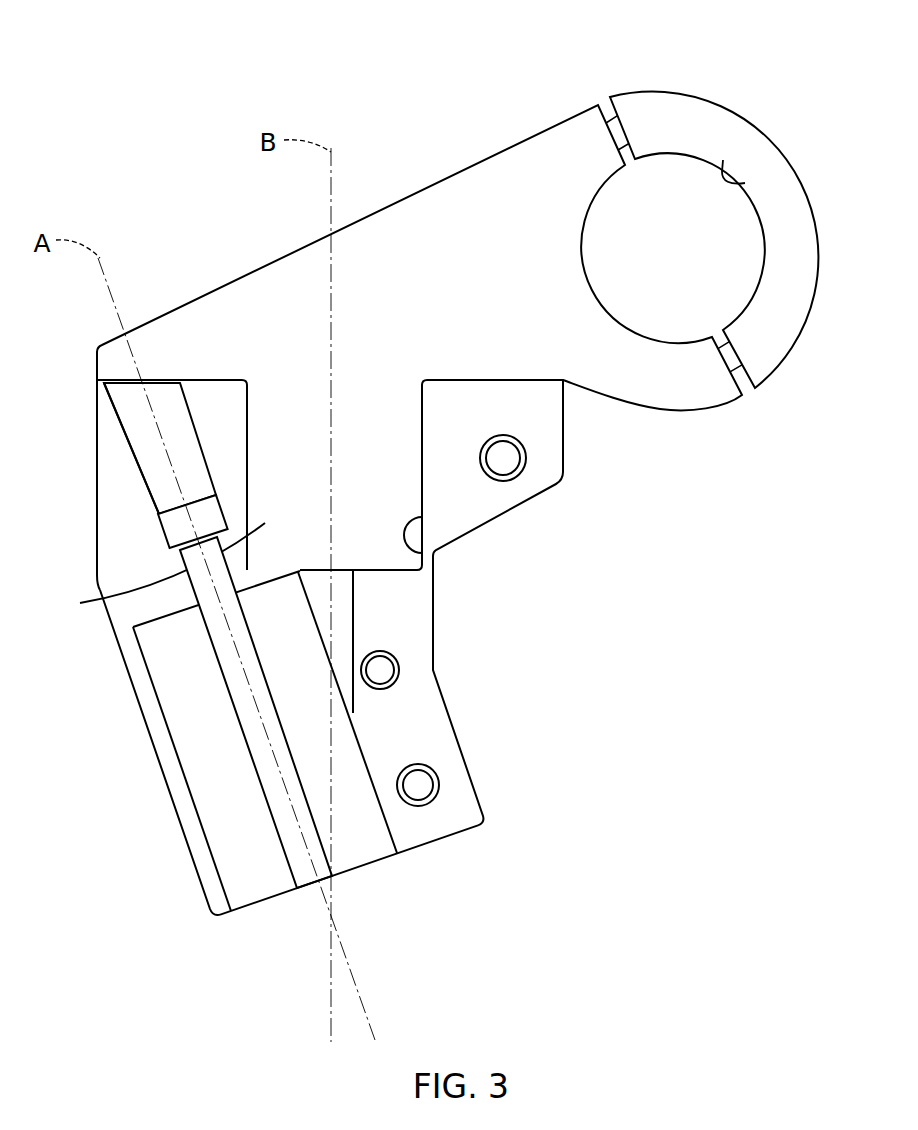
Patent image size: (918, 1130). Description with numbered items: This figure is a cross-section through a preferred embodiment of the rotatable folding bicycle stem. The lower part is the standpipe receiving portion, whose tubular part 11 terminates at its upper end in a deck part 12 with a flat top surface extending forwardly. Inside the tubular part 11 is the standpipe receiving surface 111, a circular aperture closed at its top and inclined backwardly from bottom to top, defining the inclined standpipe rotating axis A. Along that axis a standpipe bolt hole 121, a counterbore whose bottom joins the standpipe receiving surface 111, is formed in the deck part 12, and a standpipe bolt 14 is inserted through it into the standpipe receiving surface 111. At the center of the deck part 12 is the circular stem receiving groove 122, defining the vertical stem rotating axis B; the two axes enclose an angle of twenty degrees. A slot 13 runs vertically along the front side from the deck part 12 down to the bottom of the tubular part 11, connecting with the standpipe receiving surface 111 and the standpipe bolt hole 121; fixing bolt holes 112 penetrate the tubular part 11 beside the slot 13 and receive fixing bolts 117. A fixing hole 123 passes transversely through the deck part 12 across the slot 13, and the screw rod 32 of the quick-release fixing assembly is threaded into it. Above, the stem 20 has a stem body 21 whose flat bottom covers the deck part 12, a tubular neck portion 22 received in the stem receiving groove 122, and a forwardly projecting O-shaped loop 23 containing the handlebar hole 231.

The stem 20 is at (457, 305).
The stem body 21 is at (243, 288).
The tubular neck portion 22 is at (180, 577).
The O-shaped loop 23 is at (675, 97).
The handlebar hole 231 is at (723, 160).
The deck part 12 is at (107, 415).
The standpipe bolt hole 121 is at (152, 477).
The stem receiving groove 122 is at (433, 555).
The fixing hole 123 is at (513, 457).
The slot 13 is at (543, 417).
The standpipe bolt 14 is at (160, 527).
The tubular part 11 is at (193, 817).
The standpipe receiving surface 111 is at (220, 872).
The fixing bolt holes 112 is at (385, 662).
The fixing bolts 117 is at (393, 683).
The screw rod 32 is at (498, 470).